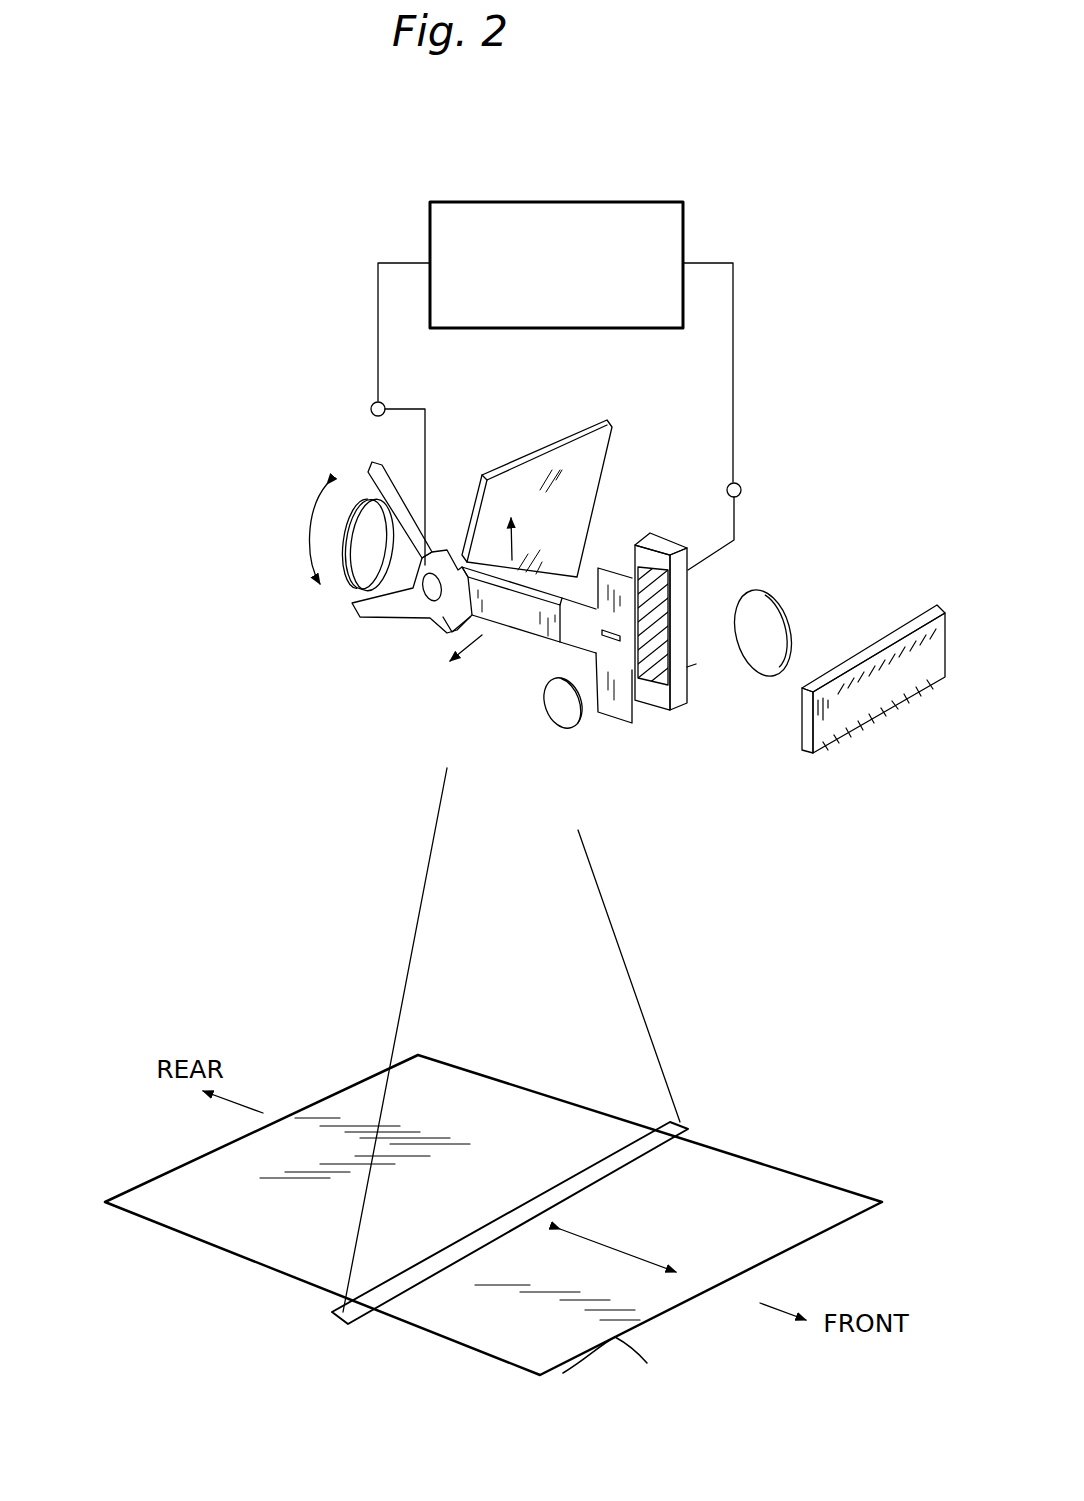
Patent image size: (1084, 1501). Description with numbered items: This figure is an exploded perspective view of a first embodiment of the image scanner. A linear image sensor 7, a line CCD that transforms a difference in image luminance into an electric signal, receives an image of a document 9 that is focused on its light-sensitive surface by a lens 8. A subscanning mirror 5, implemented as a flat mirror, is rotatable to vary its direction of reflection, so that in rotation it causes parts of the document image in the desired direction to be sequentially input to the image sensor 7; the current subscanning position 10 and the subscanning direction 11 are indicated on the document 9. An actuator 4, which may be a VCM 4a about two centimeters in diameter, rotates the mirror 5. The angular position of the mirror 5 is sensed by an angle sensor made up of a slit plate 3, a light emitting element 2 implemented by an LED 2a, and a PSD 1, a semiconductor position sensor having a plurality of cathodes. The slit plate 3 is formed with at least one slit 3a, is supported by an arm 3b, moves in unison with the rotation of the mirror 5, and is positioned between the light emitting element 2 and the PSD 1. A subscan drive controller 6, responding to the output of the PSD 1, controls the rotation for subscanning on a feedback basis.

The PSD 1 is at (687, 697).
The light emitting element 2 is at (490, 732).
The LED 2a is at (567, 727).
The slit plate 3 is at (617, 723).
The slit 3a is at (607, 645).
The arm 3b is at (535, 585).
The actuator 4 is at (340, 590).
The VCM 4a is at (355, 498).
The subscanning mirror 5 is at (497, 465).
The subscan drive controller 6 is at (557, 202).
The linear image sensor 7 is at (813, 752).
The lens 8 is at (770, 590).
The document 9 is at (720, 1160).
The subscanning position 10 is at (680, 1122).
The subscanning direction 11 is at (643, 1257).